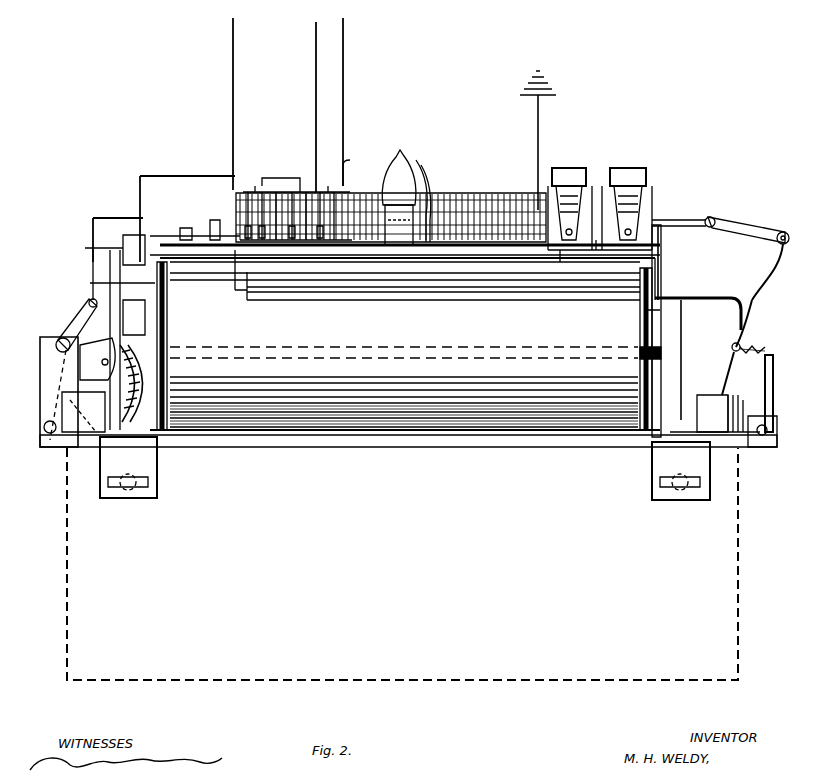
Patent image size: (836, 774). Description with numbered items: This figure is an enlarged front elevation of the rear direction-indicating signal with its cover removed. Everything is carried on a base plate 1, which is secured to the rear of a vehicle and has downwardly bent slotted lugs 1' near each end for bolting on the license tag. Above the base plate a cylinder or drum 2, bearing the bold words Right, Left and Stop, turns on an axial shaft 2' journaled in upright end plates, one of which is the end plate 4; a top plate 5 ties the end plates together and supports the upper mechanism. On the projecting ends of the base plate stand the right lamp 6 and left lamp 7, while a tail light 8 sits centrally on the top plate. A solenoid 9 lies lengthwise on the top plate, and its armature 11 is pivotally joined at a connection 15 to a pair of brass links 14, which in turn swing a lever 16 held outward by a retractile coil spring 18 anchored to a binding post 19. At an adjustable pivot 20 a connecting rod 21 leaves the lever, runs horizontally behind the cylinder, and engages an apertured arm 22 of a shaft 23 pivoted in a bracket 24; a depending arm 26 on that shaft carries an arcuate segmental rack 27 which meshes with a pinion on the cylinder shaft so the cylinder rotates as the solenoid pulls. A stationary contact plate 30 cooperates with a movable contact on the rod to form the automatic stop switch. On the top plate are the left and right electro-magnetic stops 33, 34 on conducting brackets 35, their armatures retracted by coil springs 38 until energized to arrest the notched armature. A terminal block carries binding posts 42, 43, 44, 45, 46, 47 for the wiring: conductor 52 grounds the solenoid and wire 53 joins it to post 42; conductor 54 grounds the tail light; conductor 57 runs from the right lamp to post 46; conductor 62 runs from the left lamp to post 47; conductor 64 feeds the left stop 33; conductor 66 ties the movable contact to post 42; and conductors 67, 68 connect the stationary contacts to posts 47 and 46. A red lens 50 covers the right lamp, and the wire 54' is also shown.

The base plate 1 is at (408, 454).
The slotted lugs 1' is at (405, 479).
The cylinder or drum 2 is at (405, 370).
The axial shaft 2' is at (675, 345).
The end plate or wall 4 is at (165, 352).
The top plate 5 is at (470, 259).
The right lamp 6 is at (726, 394).
The left lamp 7 is at (86, 398).
The tail light bulb 8 is at (408, 162).
The solenoid 9 is at (460, 203).
The armature 11 is at (776, 429).
The links 14 is at (752, 233).
The pivotal connection 15 is at (711, 217).
The lever 16 is at (757, 300).
The retractile coil spring 18 is at (762, 350).
The upright or binding post 19 is at (773, 381).
The adjustable pivotal connection 20 is at (732, 348).
The connecting rod 21 is at (163, 340).
The apertured arm 22 is at (78, 320).
The shaft 23 is at (61, 340).
The bracket or plate 24 is at (42, 352).
The depending arm 26 is at (44, 427).
The segmental rack or drive gear 27 is at (127, 398).
The contact plate 30 is at (101, 372).
The left electro-magnetic stop 33 is at (571, 168).
The right electro-magnetic stop 34 is at (633, 172).
The bracket 35 is at (600, 252).
The retractile coil springs 38 is at (582, 262).
The binding post 42 is at (329, 190).
The binding post 43 is at (300, 190).
The binding post 44 is at (272, 186).
The binding post 45 is at (258, 186).
The binding post 46 is at (238, 290).
The binding post 47 is at (186, 228).
The lens 50 is at (741, 414).
The conductor 52 is at (537, 116).
The wire or conductor 53 is at (352, 165).
The conductor 54 is at (399, 197).
The wire 54' is at (299, 107).
The conductor 57 is at (367, 300).
The conductor 62 is at (85, 248).
The conductor 64 is at (505, 292).
The conductor 66 is at (345, 63).
The conductor 67 is at (100, 283).
The conductor 68 is at (232, 68).